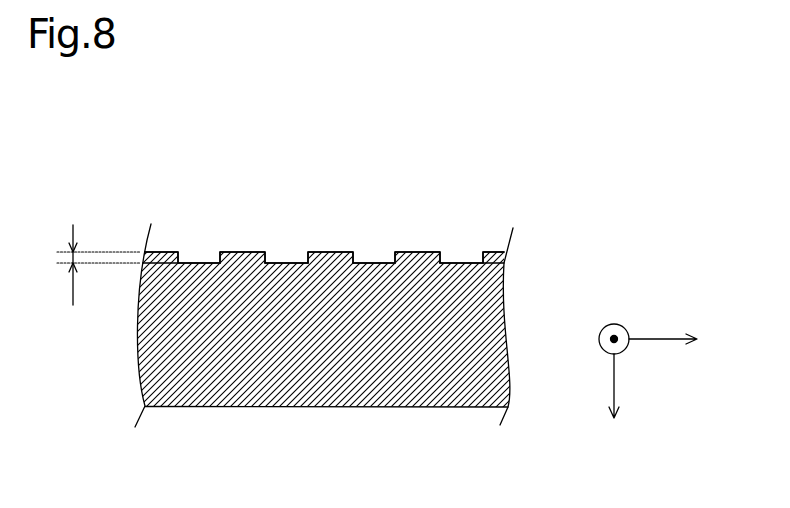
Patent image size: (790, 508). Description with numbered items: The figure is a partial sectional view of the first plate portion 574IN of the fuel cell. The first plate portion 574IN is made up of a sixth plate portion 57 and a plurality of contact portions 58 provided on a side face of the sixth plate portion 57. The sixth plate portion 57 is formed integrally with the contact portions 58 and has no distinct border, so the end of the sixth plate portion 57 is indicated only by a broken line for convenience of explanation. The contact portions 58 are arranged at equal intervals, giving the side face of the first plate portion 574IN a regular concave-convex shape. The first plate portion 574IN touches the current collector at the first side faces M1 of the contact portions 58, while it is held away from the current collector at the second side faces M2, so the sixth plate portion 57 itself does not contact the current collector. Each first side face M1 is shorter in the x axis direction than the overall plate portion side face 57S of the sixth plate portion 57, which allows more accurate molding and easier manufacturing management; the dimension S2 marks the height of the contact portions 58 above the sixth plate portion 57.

The first plate portion 574IN is at (562, 143).
The sixth plate portion 57 is at (333, 408).
The plate portion side face 57S is at (142, 349).
The contact portions 58 is at (170, 252).
The first side face M1 is at (157, 253).
The second side face M2 is at (208, 262).
The height of projection S2 is at (91, 267).